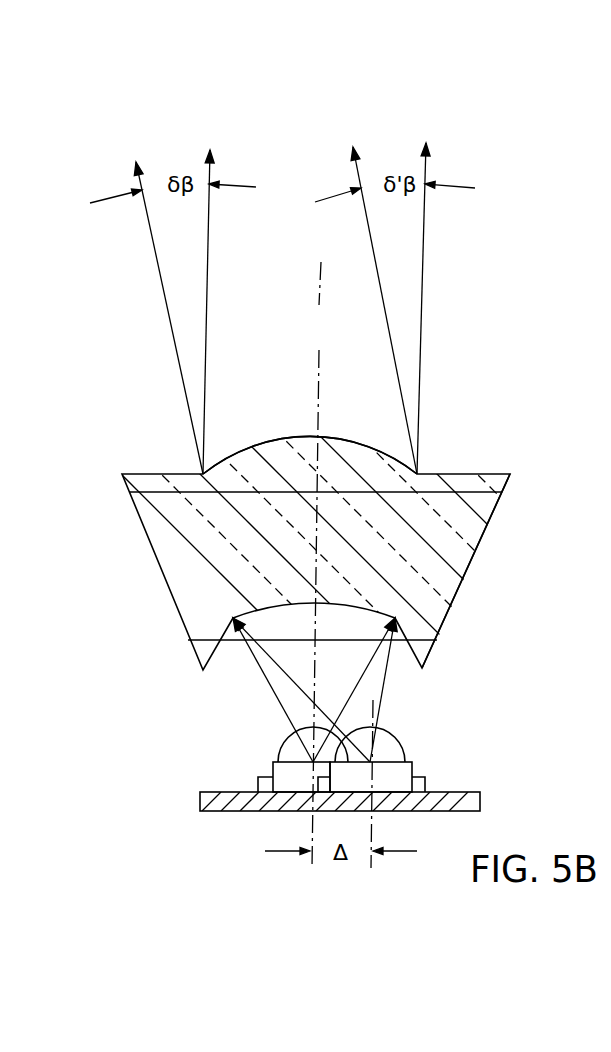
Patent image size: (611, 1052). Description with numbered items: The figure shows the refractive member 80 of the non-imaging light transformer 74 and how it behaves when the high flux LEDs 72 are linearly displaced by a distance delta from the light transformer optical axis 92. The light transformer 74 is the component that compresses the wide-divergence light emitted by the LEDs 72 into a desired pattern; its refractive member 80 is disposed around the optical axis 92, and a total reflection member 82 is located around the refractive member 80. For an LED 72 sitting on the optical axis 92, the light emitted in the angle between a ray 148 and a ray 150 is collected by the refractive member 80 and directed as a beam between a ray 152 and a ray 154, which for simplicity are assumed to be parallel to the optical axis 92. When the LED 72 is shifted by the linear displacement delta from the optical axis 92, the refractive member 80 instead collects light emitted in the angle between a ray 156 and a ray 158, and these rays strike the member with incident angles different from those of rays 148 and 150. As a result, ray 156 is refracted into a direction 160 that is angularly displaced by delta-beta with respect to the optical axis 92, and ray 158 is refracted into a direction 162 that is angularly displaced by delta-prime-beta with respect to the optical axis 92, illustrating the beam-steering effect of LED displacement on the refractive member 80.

The non-imaging light transformer 74 is at (452, 450).
The refractive member 80 is at (363, 514).
The total reflection member 82 is at (420, 588).
The optical axis 92 is at (322, 565).
The high flux LED 72 is at (282, 778).
The ray 148 is at (267, 690).
The ray 150 is at (354, 690).
The ray 156 is at (301, 689).
The ray 158 is at (395, 690).
The ray 152 is at (226, 300).
The ray 154 is at (443, 294).
The direction 160 is at (146, 303).
The direction 162 is at (366, 297).